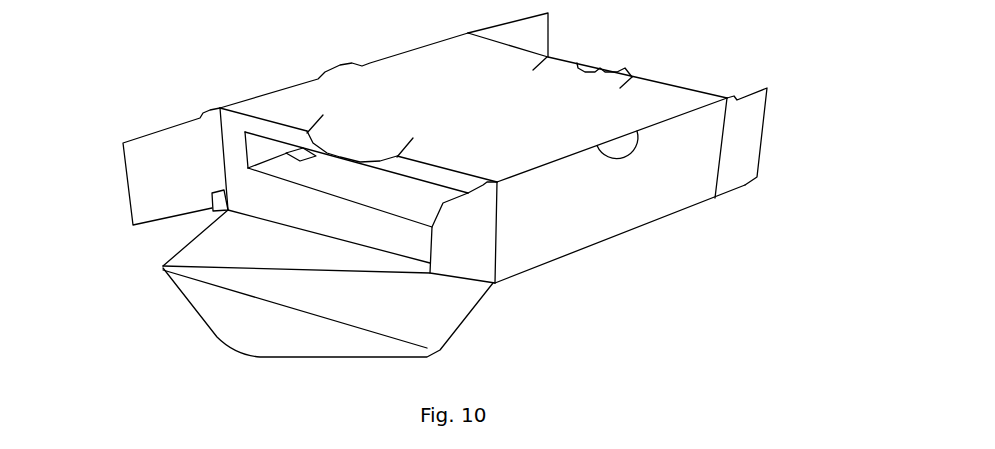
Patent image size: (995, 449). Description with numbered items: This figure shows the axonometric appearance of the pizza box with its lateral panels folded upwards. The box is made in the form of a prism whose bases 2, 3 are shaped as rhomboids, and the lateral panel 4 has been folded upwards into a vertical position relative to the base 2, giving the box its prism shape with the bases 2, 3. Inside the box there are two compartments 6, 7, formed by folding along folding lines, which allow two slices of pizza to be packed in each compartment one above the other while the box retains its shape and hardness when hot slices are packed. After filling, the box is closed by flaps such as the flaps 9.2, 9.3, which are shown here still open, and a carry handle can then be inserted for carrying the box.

The base 2 is at (332, 212).
The base 3 is at (644, 98).
The lateral panel 4 is at (625, 190).
The compartment 6 is at (332, 182).
The compartment 7 is at (275, 125).
The flap 9.2 is at (742, 131).
The flap 9.3 is at (523, 34).